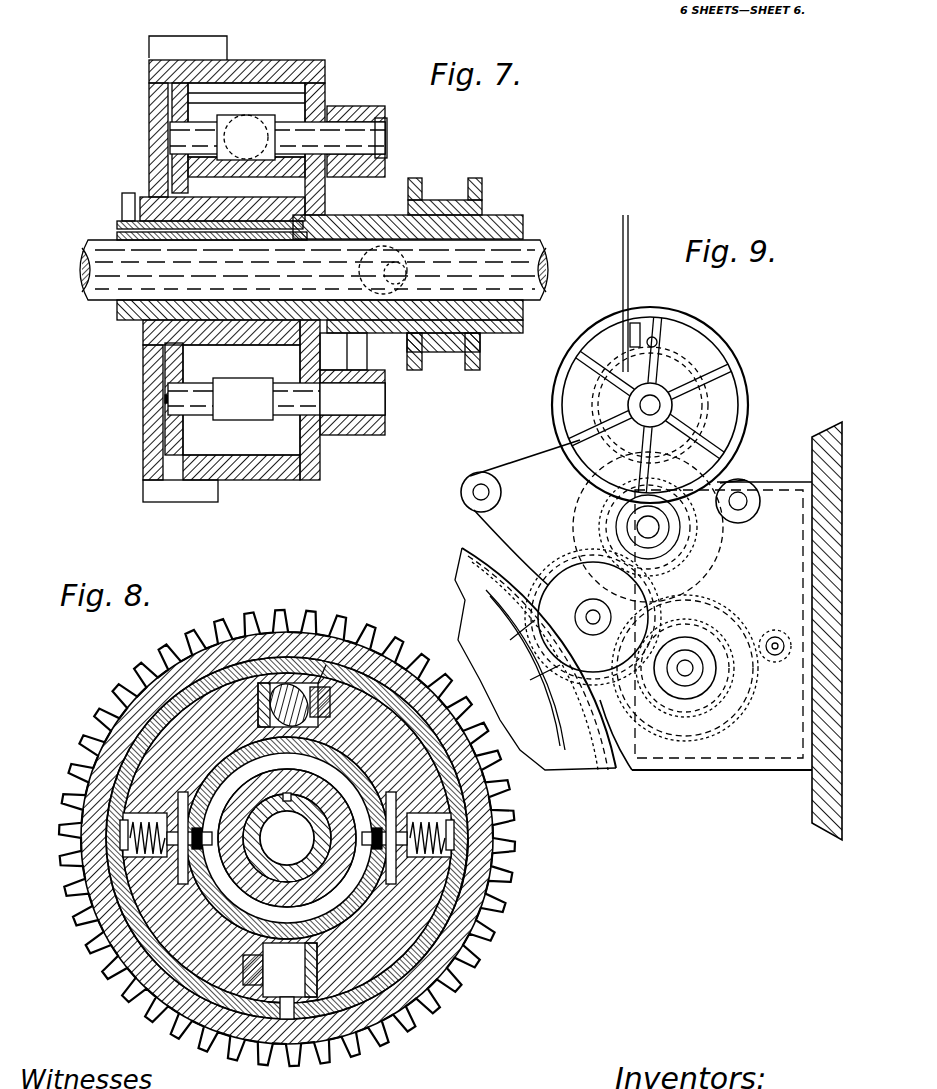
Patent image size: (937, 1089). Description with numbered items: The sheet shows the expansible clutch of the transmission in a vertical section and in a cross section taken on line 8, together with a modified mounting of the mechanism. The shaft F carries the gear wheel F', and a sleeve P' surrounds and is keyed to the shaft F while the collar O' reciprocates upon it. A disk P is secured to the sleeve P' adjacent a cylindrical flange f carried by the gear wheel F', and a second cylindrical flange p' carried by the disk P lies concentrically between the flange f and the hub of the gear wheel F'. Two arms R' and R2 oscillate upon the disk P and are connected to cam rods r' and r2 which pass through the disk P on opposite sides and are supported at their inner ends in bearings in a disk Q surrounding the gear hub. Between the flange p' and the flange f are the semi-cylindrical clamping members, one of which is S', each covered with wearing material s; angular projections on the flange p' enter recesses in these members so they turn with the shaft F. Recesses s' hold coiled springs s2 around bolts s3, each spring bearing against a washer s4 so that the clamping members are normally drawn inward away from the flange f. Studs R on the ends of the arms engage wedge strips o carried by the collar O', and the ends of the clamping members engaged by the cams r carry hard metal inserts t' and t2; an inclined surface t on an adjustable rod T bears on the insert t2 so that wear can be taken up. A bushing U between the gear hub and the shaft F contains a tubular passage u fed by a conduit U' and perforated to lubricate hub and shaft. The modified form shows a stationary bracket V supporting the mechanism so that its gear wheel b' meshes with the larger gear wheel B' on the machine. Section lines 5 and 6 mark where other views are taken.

In FIG. 7, the shaft F is at (323, 260).
In FIG. 8, the shaft F is at (248, 792).
In FIG. 7, the gear wheel F' is at (162, 44).
In FIG. 7, the disk P is at (257, 134).
In FIG. 7, the sleeve P' is at (347, 257).
In FIG. 7, the cam r is at (277, 90).
In FIG. 8, the cam r is at (296, 835).
In FIG. 7, the cam rod r' is at (356, 128).
In FIG. 9, the cam rod r' is at (732, 527).
In FIG. 7, the cam rod r2 is at (323, 428).
In FIG. 7, the stud R is at (400, 365).
In FIG. 7, the arm R' is at (398, 129).
In FIG. 7, the arm R2 is at (385, 432).
In FIG. 7, the cylindrical flange f is at (257, 125).
In FIG. 7, the wedge strip o is at (445, 292).
In FIG. 7, the collar O' is at (470, 193).
In FIG. 7, the tubular passage u is at (118, 229).
In FIG. 8, the tubular passage u is at (232, 742).
In FIG. 7, the bushing U is at (196, 396).
In FIG. 7, the conduit U' is at (108, 194).
In FIG. 7, the disk Q is at (158, 364).
In FIG. 7, the cylindrical flange p' is at (133, 418).
In FIG. 8, the cylindrical flange p' is at (490, 907).
In FIG. 7, the section line 5 is at (128, 135).
In FIG. 7, the section line 6 is at (404, 65).
In FIG. 7, the section line 8 is at (248, 60).
In FIG. 8, the adjustable rod T is at (372, 667).
In FIG. 8, the clamping member S' is at (264, 838).
In FIG. 8, the stationary bracket V is at (226, 762).
In FIG. 9, the stationary bracket V is at (773, 483).
In FIG. 8, the inclined surface t is at (385, 688).
In FIG. 8, the hard metal insert t' is at (327, 829).
In FIG. 8, the hard metal insert t2 is at (338, 670).
In FIG. 8, the wearing material s is at (325, 794).
In FIG. 8, the recess s' is at (292, 832).
In FIG. 8, the coiled spring s2 is at (142, 867).
In FIG. 8, the bolt s3 is at (158, 900).
In FIG. 8, the washer s4 is at (150, 830).
In FIG. 9, the gear wheel b' is at (626, 605).
In FIG. 9, the gear wheel B' is at (555, 687).